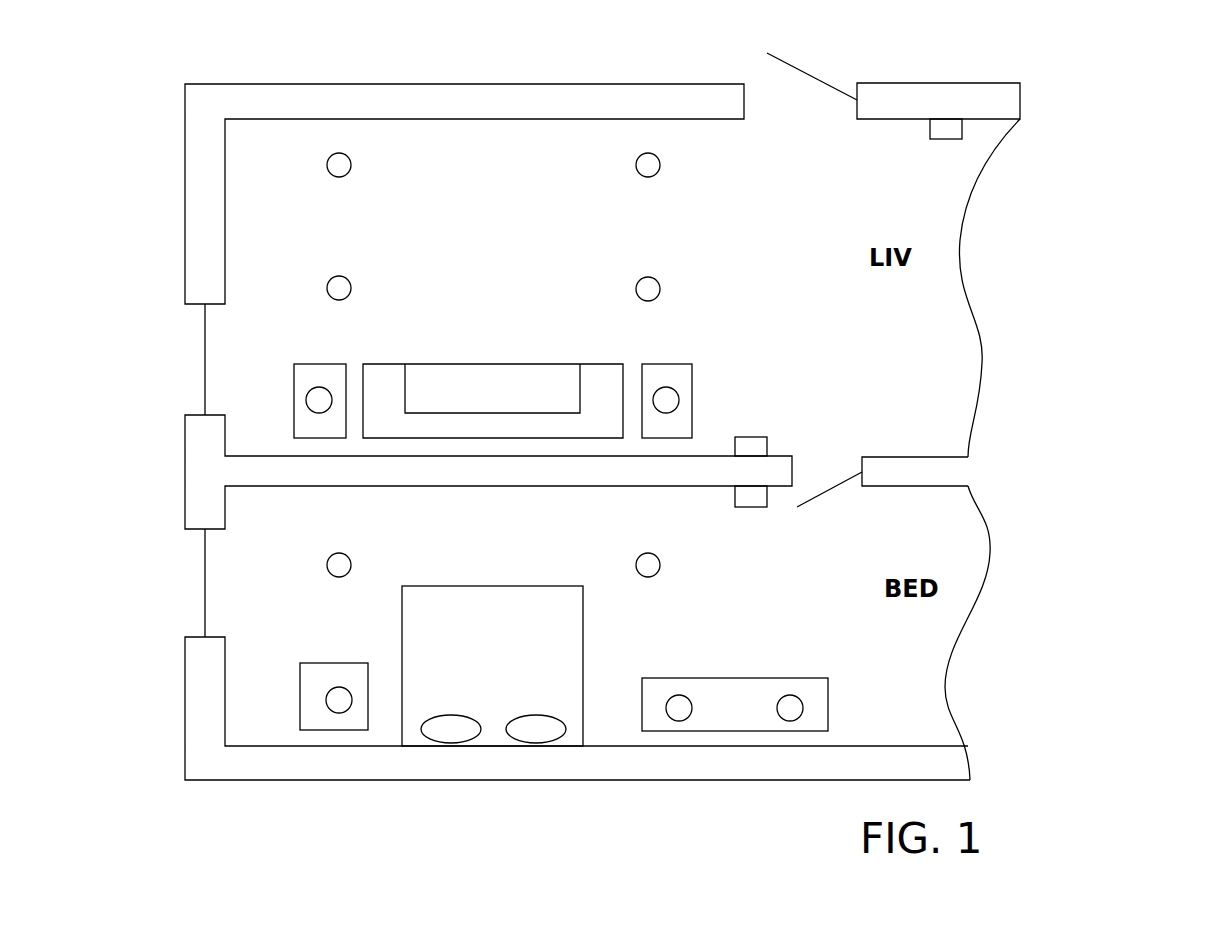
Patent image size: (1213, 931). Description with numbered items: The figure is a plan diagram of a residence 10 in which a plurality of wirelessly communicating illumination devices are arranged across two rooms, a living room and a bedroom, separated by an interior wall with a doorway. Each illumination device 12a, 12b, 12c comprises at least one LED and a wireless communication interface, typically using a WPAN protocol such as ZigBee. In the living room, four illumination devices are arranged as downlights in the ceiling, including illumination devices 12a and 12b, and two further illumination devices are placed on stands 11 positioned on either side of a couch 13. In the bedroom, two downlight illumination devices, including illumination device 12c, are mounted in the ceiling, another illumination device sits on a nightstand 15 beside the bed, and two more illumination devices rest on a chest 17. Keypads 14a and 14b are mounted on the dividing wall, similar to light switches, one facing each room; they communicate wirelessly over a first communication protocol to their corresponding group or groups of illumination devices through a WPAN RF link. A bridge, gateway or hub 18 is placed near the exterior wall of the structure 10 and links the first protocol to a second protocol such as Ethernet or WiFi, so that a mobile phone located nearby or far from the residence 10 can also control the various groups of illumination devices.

The residence 10 is at (1125, 67).
The stands 11 is at (322, 364).
The illumination device 12a is at (380, 160).
The illumination device 12b is at (687, 160).
The illumination device 12c is at (365, 555).
The couch 13 is at (495, 364).
The keypad 14a is at (750, 437).
The keypad 14b is at (752, 508).
The nightstand 15 is at (333, 663).
The chest 17 is at (735, 678).
The hub 18 is at (944, 141).